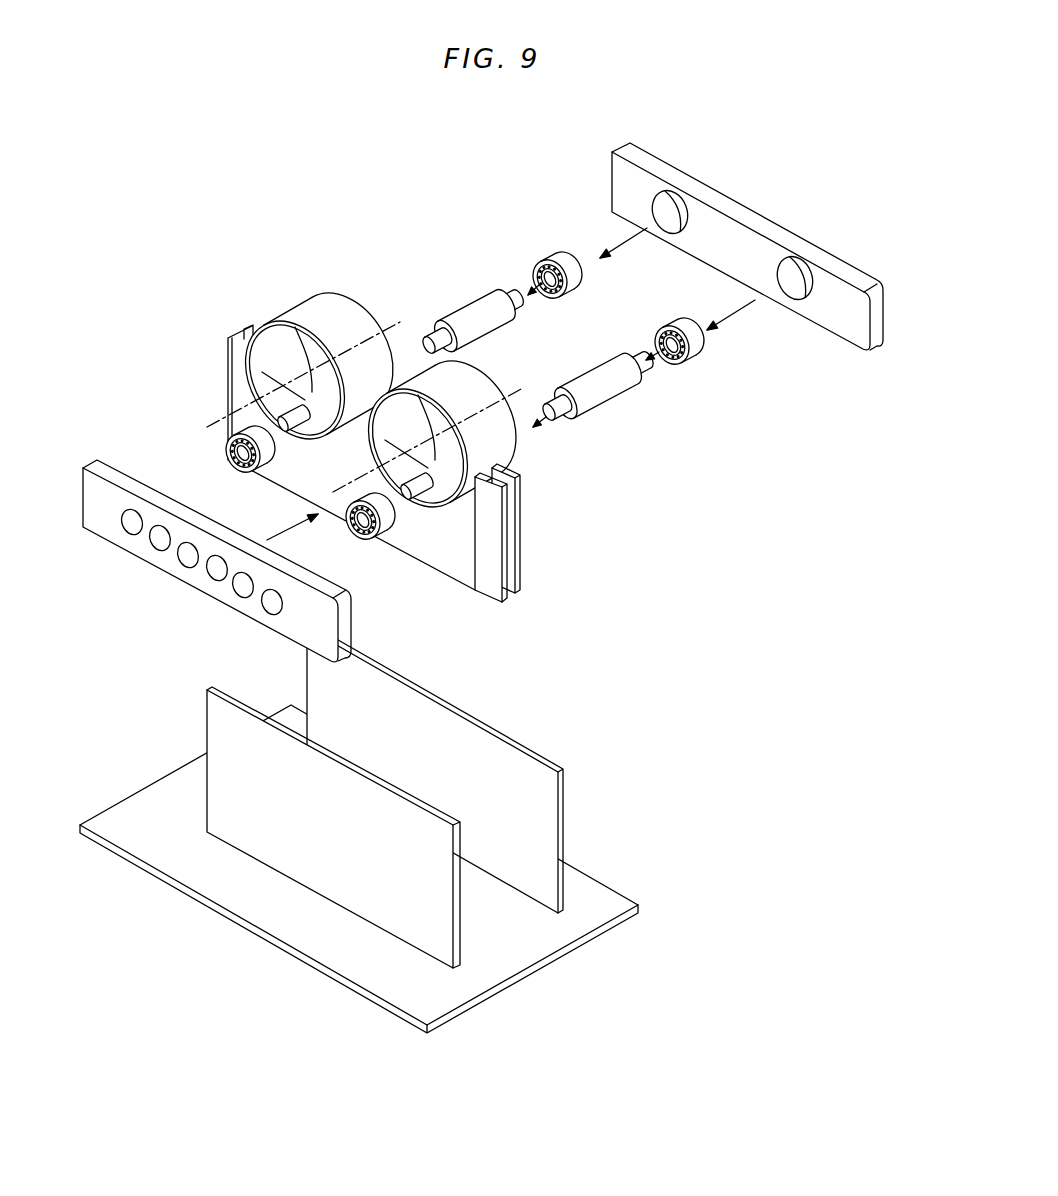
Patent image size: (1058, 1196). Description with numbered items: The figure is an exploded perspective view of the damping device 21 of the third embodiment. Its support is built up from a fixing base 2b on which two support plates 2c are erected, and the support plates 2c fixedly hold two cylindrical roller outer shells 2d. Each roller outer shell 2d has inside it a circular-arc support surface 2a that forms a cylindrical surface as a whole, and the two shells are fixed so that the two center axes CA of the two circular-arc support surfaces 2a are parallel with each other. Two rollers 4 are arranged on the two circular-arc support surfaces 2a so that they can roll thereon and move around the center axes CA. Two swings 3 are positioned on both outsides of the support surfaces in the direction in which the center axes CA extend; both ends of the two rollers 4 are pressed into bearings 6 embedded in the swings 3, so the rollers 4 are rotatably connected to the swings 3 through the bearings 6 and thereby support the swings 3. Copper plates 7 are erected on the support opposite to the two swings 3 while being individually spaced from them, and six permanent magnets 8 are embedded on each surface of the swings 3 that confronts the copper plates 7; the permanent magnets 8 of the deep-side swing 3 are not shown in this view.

The circular-arc support surface 2a is at (258, 372).
The fixing base 2b is at (571, 949).
The support plate 2c is at (524, 586).
The cylindrical roller outer shell 2d is at (340, 322).
The swing 3 is at (479, 406).
The roller 4 is at (466, 311).
The bearing 6 is at (548, 263).
The copper plate 7 is at (565, 838).
The permanent magnet 8 is at (133, 535).
The damping device 21 is at (553, 510).
The center axis CA is at (212, 423).